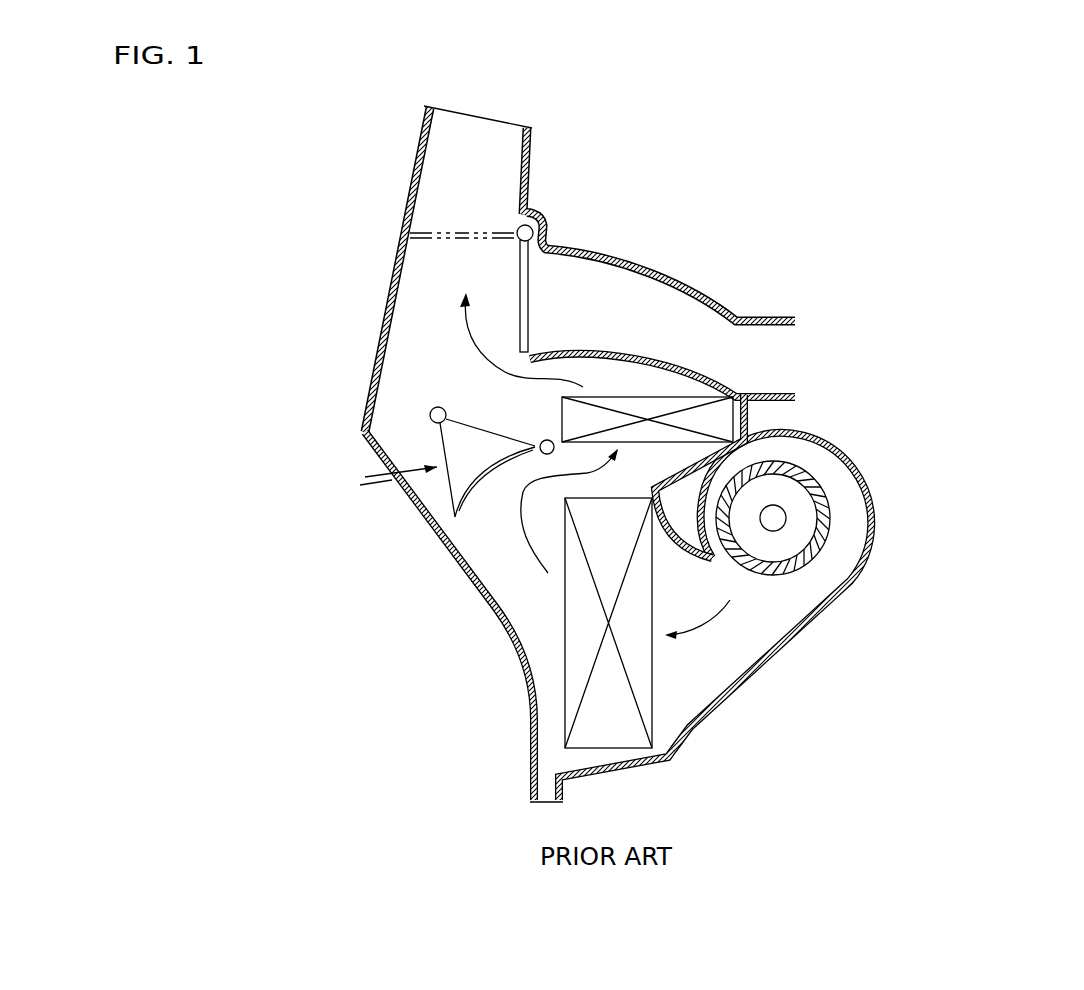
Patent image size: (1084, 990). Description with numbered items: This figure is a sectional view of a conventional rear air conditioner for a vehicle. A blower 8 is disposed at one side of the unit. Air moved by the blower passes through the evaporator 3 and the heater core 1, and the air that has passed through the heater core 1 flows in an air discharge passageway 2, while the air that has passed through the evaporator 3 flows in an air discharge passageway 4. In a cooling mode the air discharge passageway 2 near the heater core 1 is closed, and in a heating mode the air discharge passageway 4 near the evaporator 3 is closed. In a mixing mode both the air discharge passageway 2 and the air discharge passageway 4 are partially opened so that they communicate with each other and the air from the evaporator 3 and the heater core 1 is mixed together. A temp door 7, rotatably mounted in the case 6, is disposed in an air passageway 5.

The heater core 1 is at (648, 405).
The air discharge passageway 2 is at (543, 372).
The evaporator 3 is at (643, 693).
The air discharge passageway 4 is at (505, 477).
The air passageway 5 is at (538, 608).
The case 6 is at (463, 553).
The temp door 7 is at (397, 480).
The blower 8 is at (798, 538).